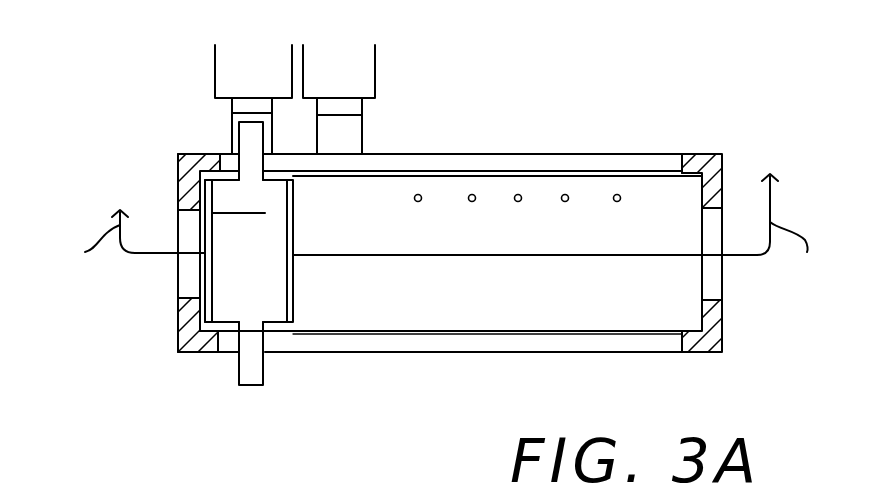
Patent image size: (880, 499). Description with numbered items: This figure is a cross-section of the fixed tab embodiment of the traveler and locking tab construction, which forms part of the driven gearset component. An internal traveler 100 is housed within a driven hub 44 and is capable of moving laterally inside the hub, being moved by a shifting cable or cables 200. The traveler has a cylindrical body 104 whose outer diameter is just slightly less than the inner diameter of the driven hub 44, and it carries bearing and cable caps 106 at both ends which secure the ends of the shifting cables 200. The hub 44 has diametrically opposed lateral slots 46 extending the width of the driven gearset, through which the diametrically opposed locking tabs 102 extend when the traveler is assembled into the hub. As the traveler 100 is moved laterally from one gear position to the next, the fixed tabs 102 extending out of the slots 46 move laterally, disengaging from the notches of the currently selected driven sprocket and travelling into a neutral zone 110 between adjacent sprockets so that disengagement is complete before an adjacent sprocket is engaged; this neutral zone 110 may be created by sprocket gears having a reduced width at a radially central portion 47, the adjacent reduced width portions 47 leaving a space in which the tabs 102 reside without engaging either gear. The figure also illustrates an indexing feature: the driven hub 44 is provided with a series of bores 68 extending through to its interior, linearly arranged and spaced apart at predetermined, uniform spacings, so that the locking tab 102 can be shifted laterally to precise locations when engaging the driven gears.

The driven hub 44 is at (694, 162).
The lateral slots 46 is at (410, 165).
The radially central portion 47 is at (228, 107).
The bores 68 is at (617, 193).
The internal traveler 100 is at (270, 272).
The locking tabs 102 is at (245, 143).
The cylindrical body 104 is at (268, 299).
The bearing and cable caps 106 is at (265, 213).
The neutral zone 110 is at (302, 133).
The shifting cables 200 is at (433, 230).